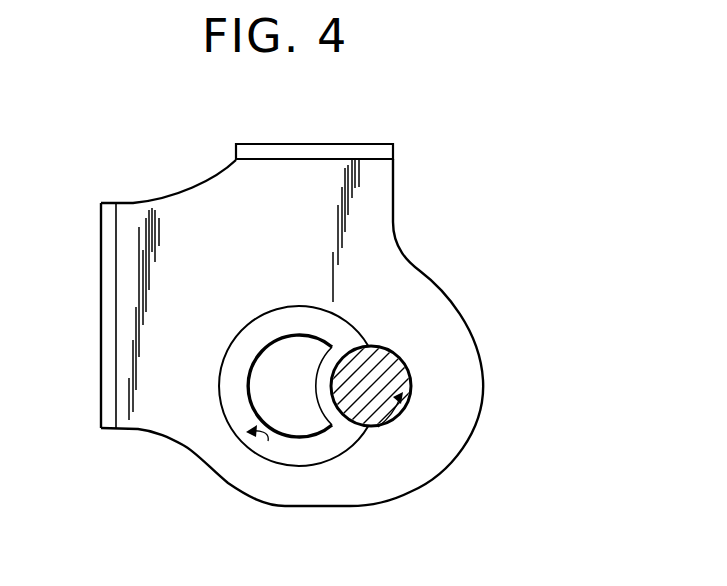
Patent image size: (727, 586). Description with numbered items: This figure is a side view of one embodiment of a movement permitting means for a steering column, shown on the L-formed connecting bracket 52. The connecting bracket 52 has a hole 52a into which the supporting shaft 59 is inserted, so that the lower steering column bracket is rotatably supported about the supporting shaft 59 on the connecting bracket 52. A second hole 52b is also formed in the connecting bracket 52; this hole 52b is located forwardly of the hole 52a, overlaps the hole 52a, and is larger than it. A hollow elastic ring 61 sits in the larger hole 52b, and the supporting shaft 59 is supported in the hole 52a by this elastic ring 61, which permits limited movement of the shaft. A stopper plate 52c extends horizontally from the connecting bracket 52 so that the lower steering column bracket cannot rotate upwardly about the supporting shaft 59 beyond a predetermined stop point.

The L-formed connecting bracket 52 is at (428, 298).
The hole 52a is at (378, 427).
The hole 52b is at (268, 441).
The stopper plate 52c is at (311, 144).
The supporting shaft 59 is at (385, 373).
The hollow elastic ring 61 is at (291, 318).